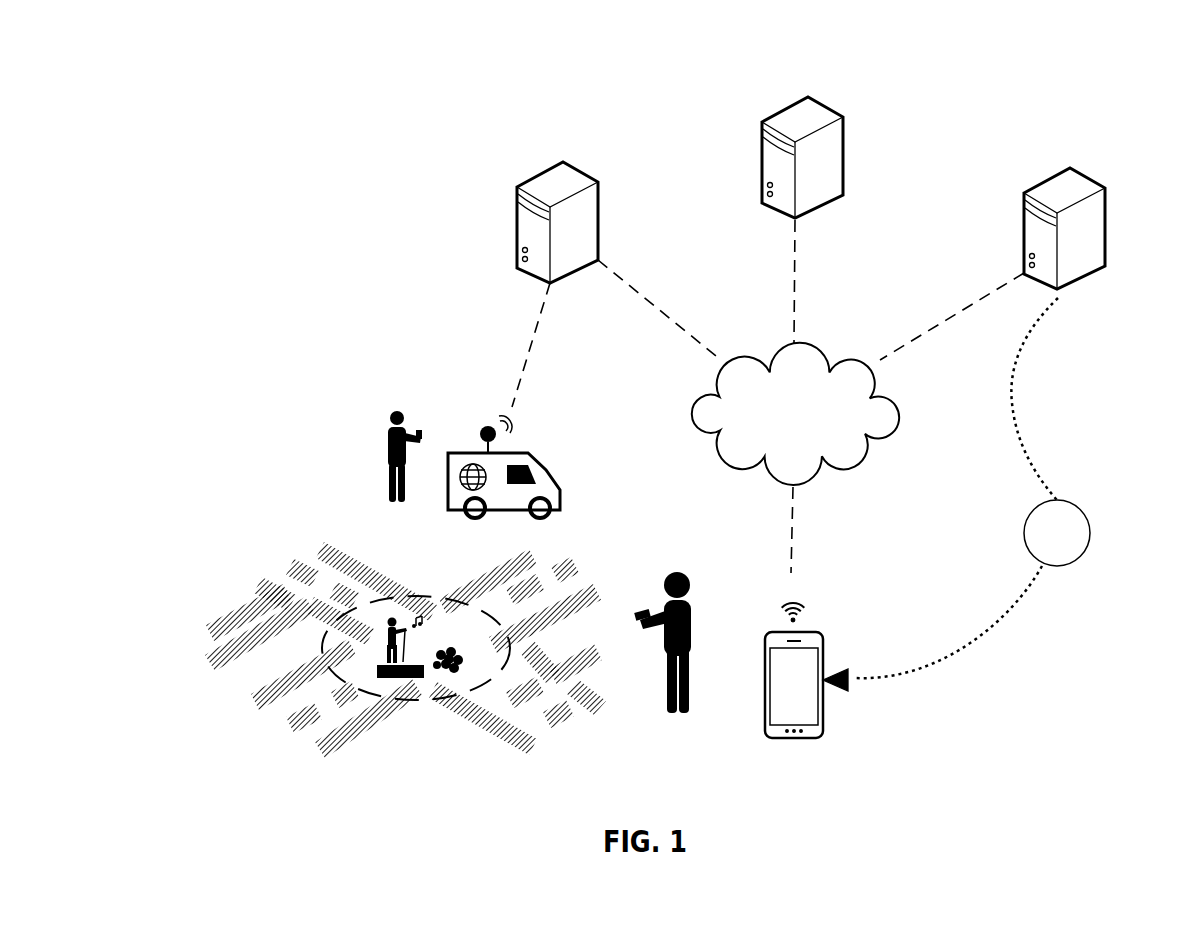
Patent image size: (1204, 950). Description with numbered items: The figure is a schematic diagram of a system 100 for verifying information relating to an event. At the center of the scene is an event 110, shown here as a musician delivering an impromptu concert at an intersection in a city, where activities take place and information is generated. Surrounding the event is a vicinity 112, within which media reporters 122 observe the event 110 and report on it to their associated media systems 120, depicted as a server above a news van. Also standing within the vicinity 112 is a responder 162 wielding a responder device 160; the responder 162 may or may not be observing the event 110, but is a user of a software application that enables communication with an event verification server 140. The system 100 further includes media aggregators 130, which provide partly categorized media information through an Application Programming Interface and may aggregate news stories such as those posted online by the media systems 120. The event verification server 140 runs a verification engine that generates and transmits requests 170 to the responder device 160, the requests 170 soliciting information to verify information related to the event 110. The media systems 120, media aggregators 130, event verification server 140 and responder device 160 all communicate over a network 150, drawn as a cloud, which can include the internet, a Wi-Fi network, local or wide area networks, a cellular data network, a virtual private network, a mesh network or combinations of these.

The system 100 is at (307, 220).
The event 110 is at (418, 592).
The vicinity 112 is at (292, 502).
The media systems 120 is at (540, 154).
The media reporters 122 is at (435, 415).
The media aggregators 130 is at (783, 84).
The event verification server 140 is at (1045, 152).
The network 150 is at (773, 442).
The responder device 160 is at (778, 830).
The responder 162 is at (658, 607).
The requests 170 is at (956, 494).